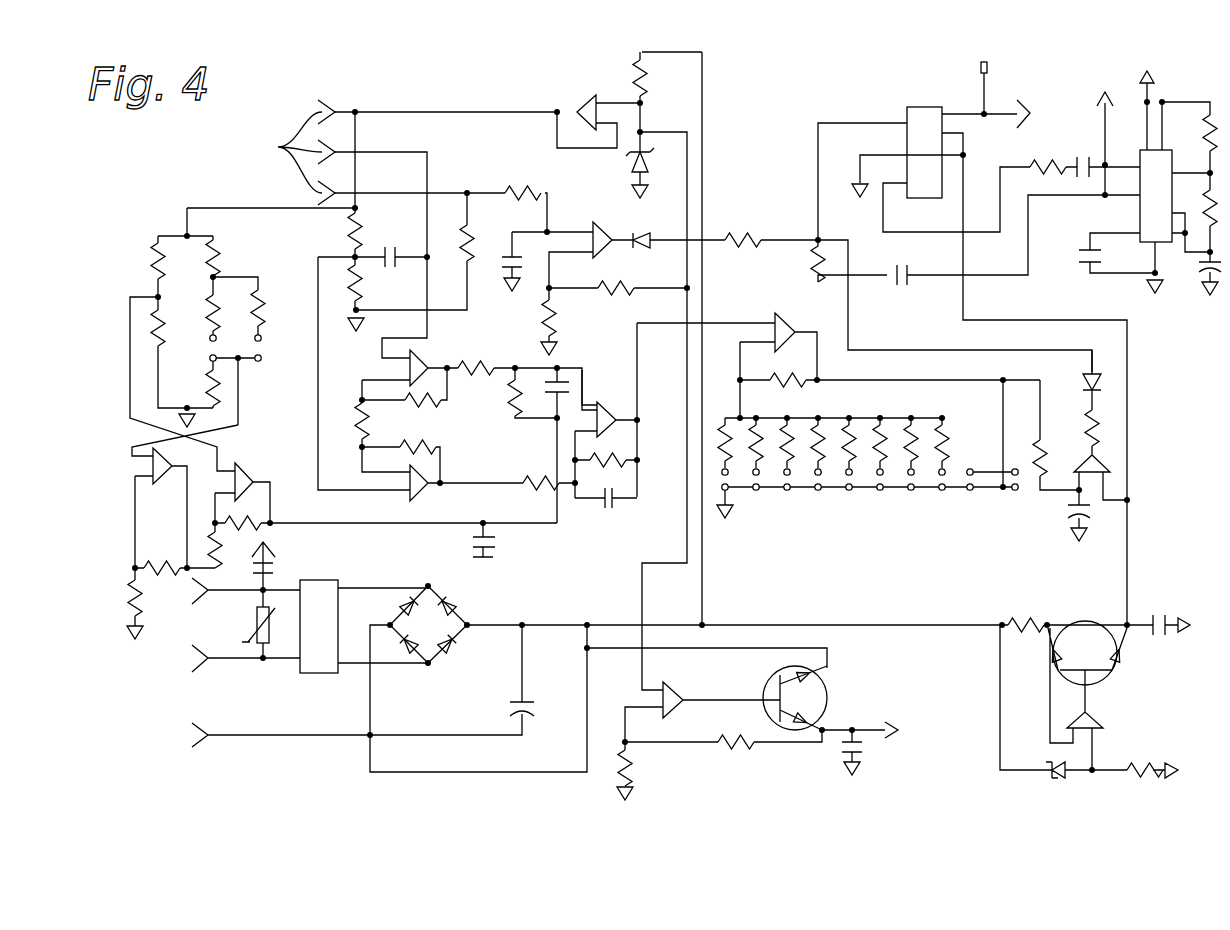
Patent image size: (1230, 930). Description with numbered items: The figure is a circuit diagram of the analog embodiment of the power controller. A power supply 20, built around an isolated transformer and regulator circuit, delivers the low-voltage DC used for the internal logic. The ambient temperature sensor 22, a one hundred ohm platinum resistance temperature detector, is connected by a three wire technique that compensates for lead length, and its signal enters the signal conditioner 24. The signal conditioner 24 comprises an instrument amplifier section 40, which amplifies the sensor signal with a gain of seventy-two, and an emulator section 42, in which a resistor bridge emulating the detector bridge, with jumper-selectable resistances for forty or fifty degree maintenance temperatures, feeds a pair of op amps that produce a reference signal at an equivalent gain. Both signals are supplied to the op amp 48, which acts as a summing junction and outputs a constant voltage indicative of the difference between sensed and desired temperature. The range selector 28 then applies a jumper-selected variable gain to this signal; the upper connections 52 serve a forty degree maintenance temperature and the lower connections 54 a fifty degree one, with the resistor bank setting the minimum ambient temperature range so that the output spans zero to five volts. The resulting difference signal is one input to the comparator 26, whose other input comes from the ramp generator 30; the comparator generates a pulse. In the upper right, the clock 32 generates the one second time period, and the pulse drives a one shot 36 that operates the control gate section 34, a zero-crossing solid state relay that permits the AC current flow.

The power supply 20 is at (316, 755).
The ambient temperature sensor 22 is at (285, 152).
The temperature signal conditioner 24 is at (207, 186).
The comparator 26 is at (1105, 454).
The range selector 28 is at (838, 497).
The ramp generator 30 is at (1143, 607).
The clock 32 is at (1178, 294).
The control gate section 34 is at (863, 103).
The one shot 36 is at (925, 107).
The instrument amplifier section 40 is at (346, 392).
The emulator section 42 is at (153, 249).
The op amp 48 is at (613, 405).
The upper connections 52 is at (721, 472).
The lower connections 54 is at (763, 491).